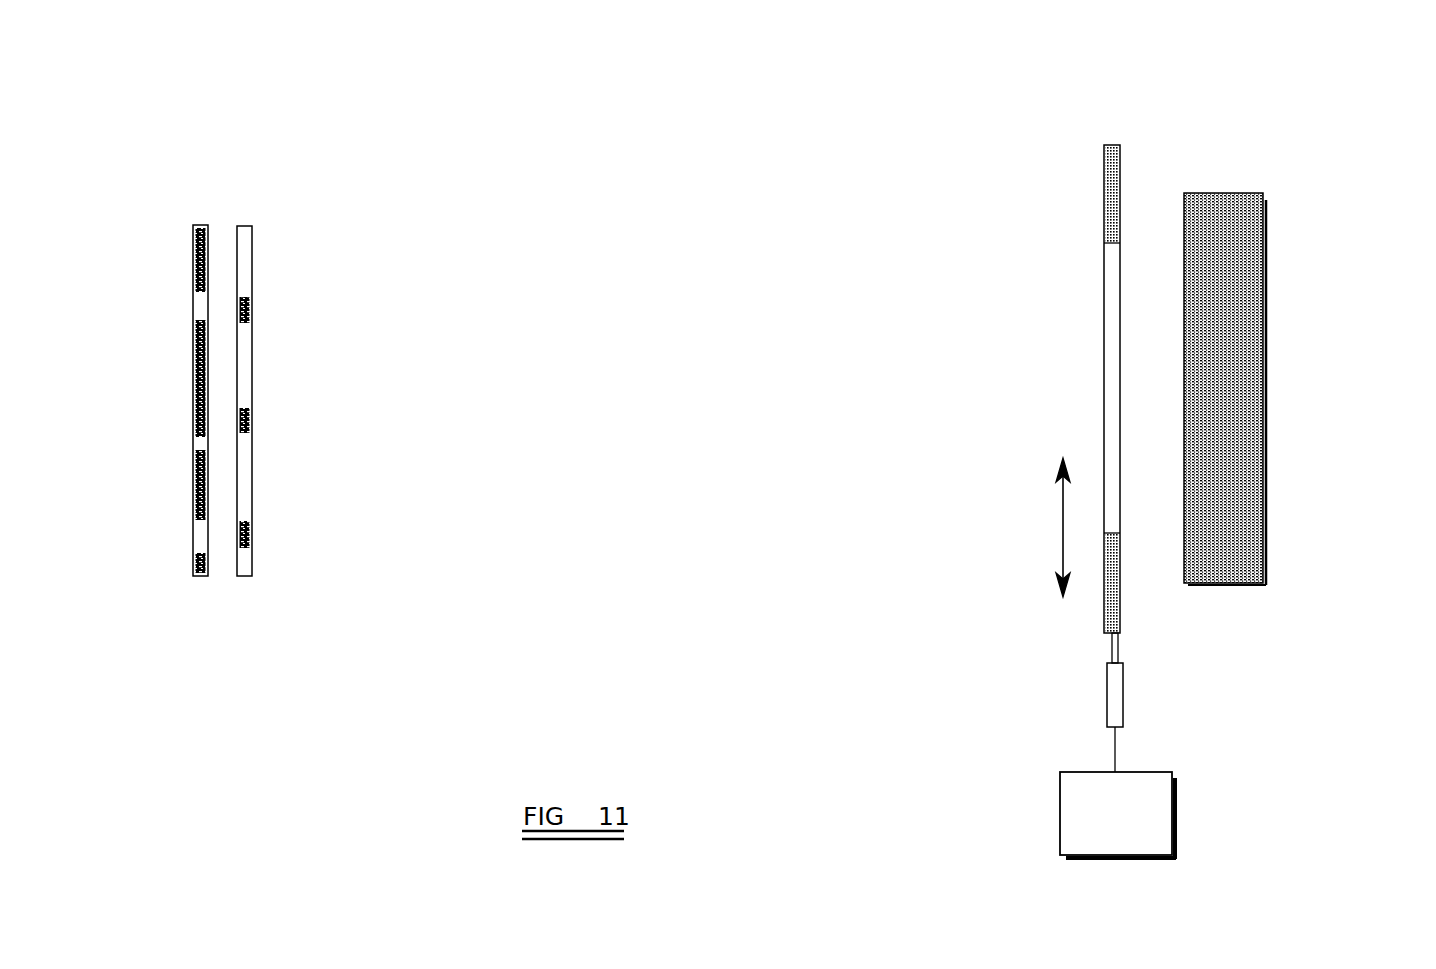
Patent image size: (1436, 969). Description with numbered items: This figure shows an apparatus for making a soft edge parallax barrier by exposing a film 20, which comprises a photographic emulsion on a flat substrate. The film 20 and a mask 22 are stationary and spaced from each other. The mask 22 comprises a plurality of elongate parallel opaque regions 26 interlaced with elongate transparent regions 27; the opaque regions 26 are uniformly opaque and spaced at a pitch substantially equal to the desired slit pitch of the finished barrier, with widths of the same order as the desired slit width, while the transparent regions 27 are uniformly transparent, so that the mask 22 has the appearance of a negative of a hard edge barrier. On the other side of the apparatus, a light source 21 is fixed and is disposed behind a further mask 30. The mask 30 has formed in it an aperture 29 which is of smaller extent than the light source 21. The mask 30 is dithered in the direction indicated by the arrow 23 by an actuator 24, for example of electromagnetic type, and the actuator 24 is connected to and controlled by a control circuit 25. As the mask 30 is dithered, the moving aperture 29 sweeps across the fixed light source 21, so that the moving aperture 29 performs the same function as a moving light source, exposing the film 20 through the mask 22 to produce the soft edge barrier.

The film 20 is at (200, 225).
The light source 21 is at (1265, 285).
The mask 22 is at (252, 226).
The arrow 23 is at (1060, 530).
The actuator 24 is at (1123, 698).
The control circuit 25 is at (1060, 813).
The opaque regions 26 is at (252, 316).
The transparent regions 27 is at (245, 370).
The aperture 29 is at (1104, 390).
The mask 30 is at (1095, 186).